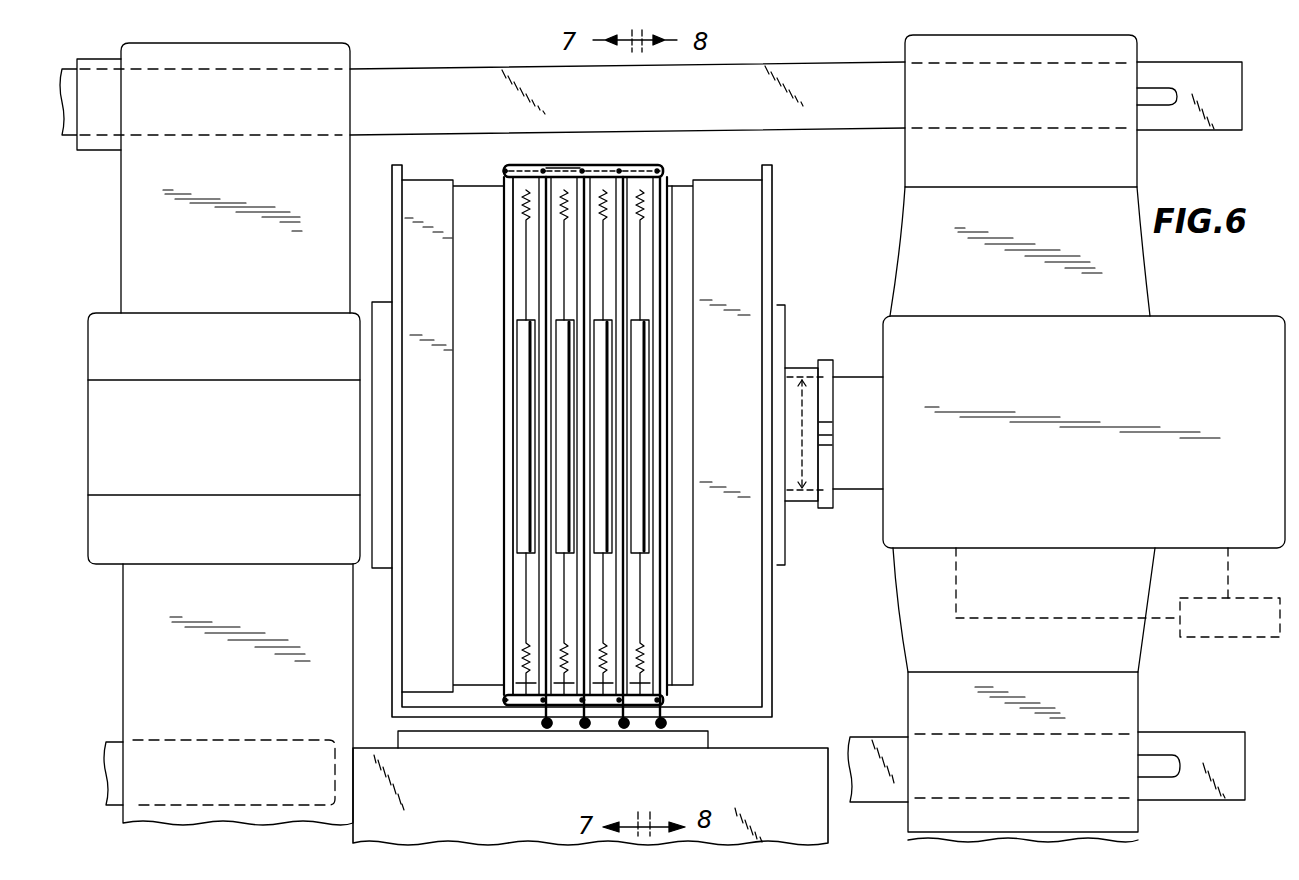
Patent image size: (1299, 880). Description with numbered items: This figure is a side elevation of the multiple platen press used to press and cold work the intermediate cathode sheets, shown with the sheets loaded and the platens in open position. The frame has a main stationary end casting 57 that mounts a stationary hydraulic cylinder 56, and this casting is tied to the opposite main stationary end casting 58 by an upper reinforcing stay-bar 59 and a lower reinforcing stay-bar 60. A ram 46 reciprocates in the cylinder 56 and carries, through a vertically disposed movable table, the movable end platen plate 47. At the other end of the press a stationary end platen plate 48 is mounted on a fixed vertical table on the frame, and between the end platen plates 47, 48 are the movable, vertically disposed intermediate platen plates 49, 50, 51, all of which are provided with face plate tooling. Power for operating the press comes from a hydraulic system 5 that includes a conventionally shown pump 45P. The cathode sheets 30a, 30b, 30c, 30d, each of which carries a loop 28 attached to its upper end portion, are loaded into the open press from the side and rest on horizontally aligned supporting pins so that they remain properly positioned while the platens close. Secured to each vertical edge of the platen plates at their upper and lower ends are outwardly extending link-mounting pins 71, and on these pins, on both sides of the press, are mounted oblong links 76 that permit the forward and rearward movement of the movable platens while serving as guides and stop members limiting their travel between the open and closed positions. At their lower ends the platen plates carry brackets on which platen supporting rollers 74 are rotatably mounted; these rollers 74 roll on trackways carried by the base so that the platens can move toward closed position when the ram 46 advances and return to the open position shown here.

The hydraulic conduit 5 is at (1079, 621).
The loop 28 is at (520, 389).
The cathode sheet 30a is at (643, 232).
The cathode sheet 30b is at (602, 265).
The cathode sheet 30c is at (565, 260).
The cathode sheet 30d is at (522, 230).
The pump 45P is at (1220, 633).
The ram 46 is at (846, 388).
The movable end platen plate 47 is at (667, 191).
The stationary end platen plate 48 is at (505, 188).
The intermediate platen plate 49 is at (646, 170).
The intermediate platen plate 50 is at (617, 170).
The intermediate platen plate 51 is at (563, 175).
The stationary hydraulic cylinder 56 is at (889, 533).
The main stationary end casting 57 is at (1138, 292).
The main stationary end casting 58 is at (120, 285).
The upper reinforcing stay-bar 59 is at (858, 127).
The lower reinforcing stay-bar 60 is at (894, 738).
The link-mounting pins 71 is at (505, 167).
The platen supporting rollers 74 is at (547, 728).
The oblong links 76 is at (524, 167).